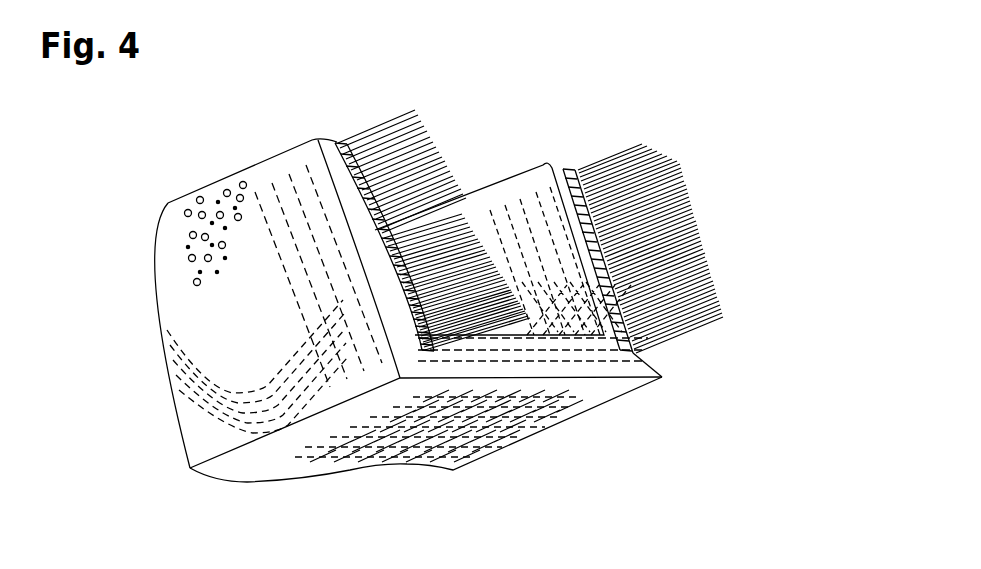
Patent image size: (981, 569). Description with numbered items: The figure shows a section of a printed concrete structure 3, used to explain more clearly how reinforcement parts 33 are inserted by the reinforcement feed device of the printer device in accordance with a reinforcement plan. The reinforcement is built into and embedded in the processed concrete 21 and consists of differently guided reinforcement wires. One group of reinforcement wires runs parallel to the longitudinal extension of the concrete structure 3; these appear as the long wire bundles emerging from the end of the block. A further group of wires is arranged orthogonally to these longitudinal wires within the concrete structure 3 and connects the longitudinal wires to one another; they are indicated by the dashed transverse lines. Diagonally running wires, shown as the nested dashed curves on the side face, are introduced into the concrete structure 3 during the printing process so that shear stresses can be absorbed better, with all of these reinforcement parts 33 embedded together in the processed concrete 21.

The concrete structure 3 is at (230, 156).
The processed concrete 21 is at (630, 350).
The reinforcement parts 33 is at (430, 110).